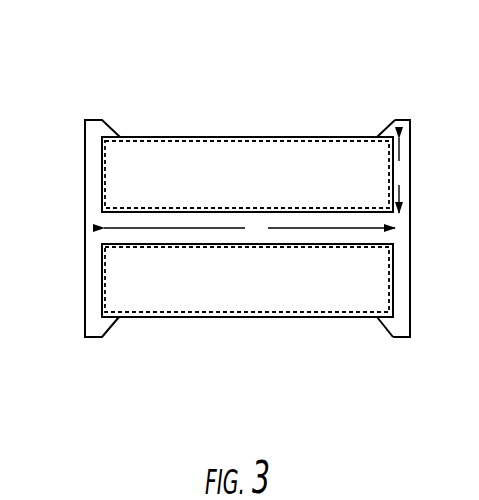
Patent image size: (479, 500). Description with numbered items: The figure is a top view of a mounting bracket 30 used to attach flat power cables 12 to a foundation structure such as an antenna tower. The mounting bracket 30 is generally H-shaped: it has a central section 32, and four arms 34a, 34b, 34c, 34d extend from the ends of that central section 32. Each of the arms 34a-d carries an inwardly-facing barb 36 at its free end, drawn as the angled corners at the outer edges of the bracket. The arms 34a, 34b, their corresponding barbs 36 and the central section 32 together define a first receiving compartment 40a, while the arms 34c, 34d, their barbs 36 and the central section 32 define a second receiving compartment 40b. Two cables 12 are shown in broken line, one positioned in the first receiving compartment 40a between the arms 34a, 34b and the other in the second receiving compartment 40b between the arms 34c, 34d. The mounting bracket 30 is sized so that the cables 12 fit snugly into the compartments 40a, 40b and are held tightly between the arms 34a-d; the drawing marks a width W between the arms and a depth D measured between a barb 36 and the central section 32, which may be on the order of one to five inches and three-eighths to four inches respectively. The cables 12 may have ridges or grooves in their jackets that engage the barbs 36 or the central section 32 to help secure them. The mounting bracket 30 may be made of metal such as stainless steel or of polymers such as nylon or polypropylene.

The mounting bracket 30 is at (228, 78).
The flat cable 12 is at (199, 140).
The central section 32 is at (279, 218).
The arm 34a is at (398, 154).
The arm 34b is at (88, 177).
The arm 34c is at (403, 288).
The arm 34d is at (102, 284).
The inwardly-facing barb 36 is at (398, 137).
The first receiving compartment 40a is at (344, 135).
The second receiving compartment 40b is at (323, 313).